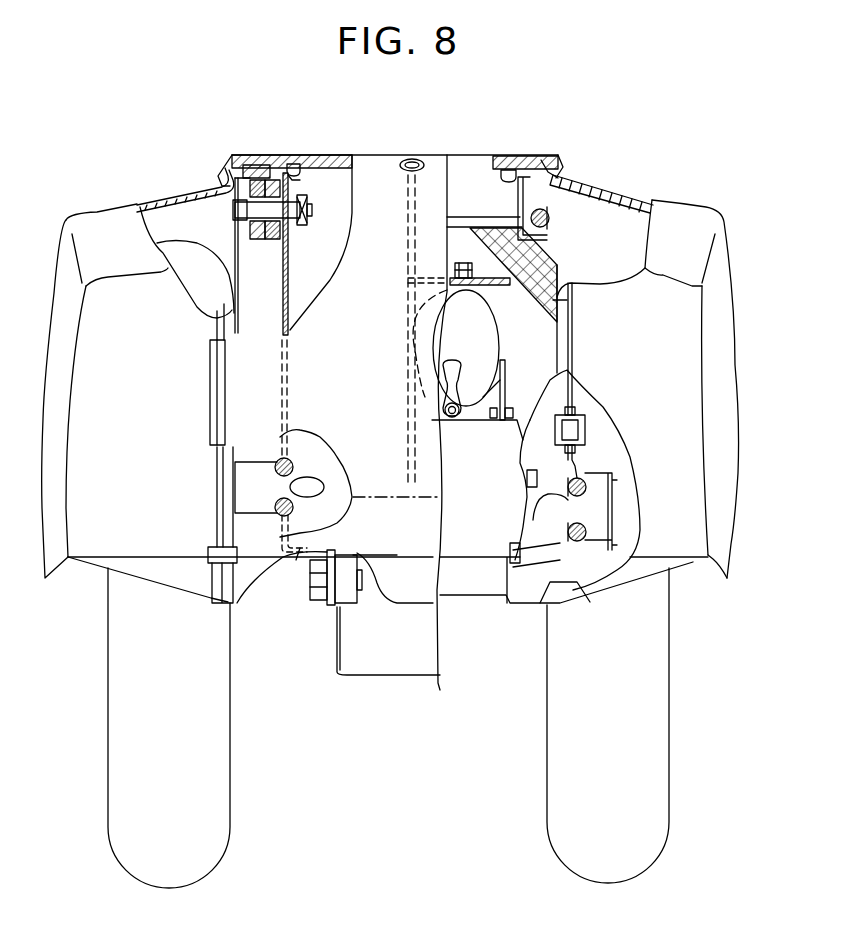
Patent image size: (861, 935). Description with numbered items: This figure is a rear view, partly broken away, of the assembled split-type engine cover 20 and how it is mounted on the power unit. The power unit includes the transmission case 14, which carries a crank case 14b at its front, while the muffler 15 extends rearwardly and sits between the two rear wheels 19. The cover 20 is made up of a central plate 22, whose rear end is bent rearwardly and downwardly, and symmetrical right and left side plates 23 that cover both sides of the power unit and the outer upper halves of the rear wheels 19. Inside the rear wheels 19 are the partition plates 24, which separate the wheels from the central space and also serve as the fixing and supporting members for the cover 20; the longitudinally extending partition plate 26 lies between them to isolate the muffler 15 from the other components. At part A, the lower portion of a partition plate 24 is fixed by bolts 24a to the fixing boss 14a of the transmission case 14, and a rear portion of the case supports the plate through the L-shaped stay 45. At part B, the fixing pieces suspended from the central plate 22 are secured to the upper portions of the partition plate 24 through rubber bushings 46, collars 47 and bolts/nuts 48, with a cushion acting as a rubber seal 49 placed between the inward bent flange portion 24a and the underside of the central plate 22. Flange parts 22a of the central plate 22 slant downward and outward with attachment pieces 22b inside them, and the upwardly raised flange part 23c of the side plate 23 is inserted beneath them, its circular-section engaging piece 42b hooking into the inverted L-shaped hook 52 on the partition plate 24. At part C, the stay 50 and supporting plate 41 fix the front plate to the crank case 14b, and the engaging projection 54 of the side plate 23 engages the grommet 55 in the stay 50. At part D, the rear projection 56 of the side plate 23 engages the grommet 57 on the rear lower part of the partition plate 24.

The transmission case 14 is at (366, 496).
The fixing boss 14a is at (332, 607).
The crank case 14b is at (457, 597).
The muffler 15 is at (487, 353).
The rear wheels 19 is at (113, 673).
The cover 20 is at (684, 197).
The central plate 22 is at (317, 152).
The flange parts 22a is at (217, 176).
The attachment pieces 22b is at (250, 163).
The side plates 23 is at (54, 446).
The flange part 23c is at (217, 188).
The partition plates 24 is at (289, 316).
The bolts 24a is at (297, 178).
The longitudinally extending partition plate 26 is at (413, 328).
The supporting plate 41 is at (592, 470).
The engaging piece 42b is at (556, 219).
The L-shaped stay 45 is at (296, 560).
The rubber bushings 46 is at (277, 242).
The collars 47 is at (250, 232).
The bolts/nuts 48 is at (303, 222).
The rubber seal 49 is at (289, 162).
The stay 50 is at (537, 540).
The inverted L-shaped hook 52 is at (565, 186).
The engaging projection 54 is at (578, 510).
The grommet 55 is at (583, 481).
The projection 56 is at (297, 483).
The grommet 57 is at (278, 460).
The part A is at (318, 605).
The part B is at (247, 173).
The part C is at (545, 572).
The part D is at (330, 473).